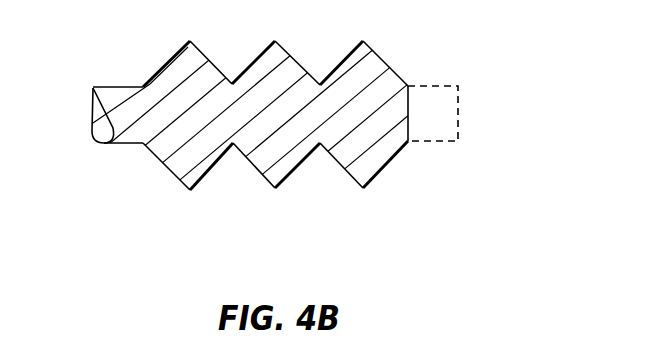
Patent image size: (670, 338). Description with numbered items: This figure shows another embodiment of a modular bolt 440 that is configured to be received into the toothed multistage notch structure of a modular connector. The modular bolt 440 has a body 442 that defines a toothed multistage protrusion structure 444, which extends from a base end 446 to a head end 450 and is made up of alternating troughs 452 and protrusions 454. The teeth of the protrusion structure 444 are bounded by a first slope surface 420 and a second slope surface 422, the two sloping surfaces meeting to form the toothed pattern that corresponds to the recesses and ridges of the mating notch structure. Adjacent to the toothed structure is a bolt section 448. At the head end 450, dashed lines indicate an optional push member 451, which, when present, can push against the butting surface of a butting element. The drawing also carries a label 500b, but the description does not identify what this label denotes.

The modular bolt 440 is at (175, 228).
The body 442 is at (128, 118).
The toothed multistage protrusion structure 444 is at (262, 228).
The base end 446 is at (113, 158).
The bolt section 448 is at (112, 72).
The first slope surface 420 is at (309, 166).
The second slope surface 422 is at (337, 168).
The head end 450 is at (520, 118).
The push member 451 is at (433, 115).
The troughs 452 is at (330, 192).
The protrusions 454 is at (273, 58).
The adjacent structure 500b is at (535, 337).